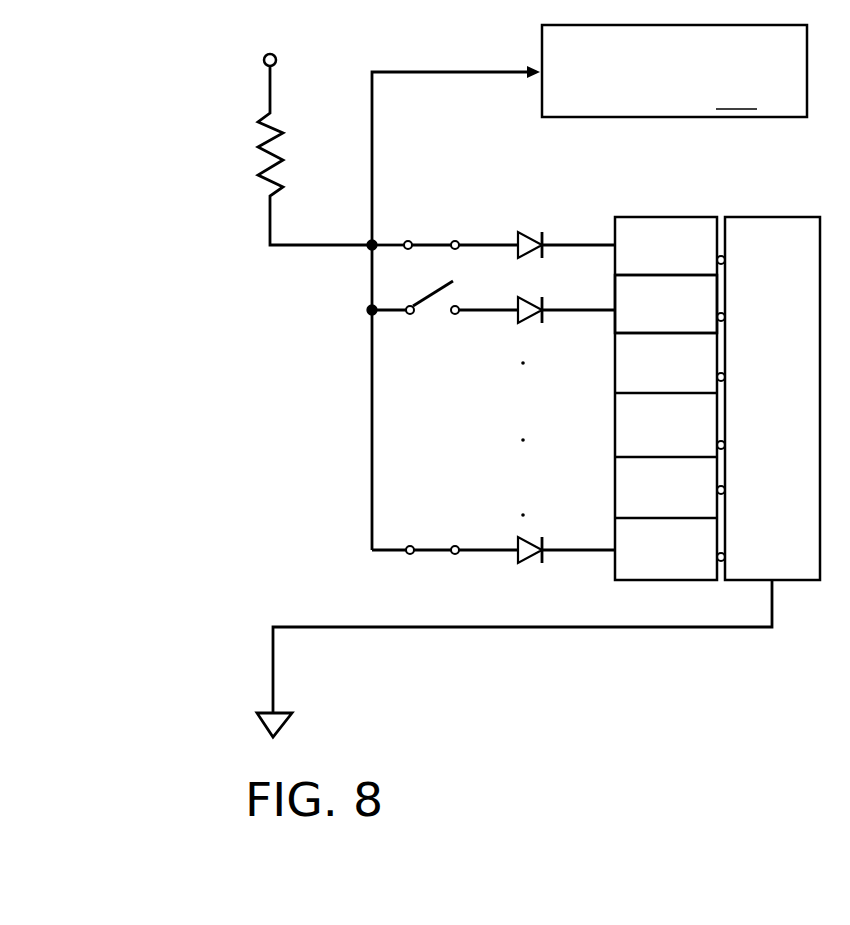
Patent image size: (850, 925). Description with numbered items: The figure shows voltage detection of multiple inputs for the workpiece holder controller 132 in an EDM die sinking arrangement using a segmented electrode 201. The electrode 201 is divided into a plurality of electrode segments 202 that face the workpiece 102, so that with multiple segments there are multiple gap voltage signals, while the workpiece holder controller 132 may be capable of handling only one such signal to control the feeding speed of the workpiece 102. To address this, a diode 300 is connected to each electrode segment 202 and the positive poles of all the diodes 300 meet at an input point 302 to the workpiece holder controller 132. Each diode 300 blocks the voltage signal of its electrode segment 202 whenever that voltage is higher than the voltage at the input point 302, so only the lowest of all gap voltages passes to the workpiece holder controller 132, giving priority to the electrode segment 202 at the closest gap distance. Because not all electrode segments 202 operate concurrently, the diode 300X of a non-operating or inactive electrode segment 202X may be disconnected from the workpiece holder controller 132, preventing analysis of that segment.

The electrode 201 is at (162, 68).
The workpiece holder controller 132 is at (674, 71).
The input point 302 is at (373, 177).
The diodes 300 is at (518, 231).
The diode 300X is at (524, 320).
The electrode segments 202 is at (645, 259).
The inactive electrode segment 202X is at (636, 319).
The workpiece 102 is at (798, 397).